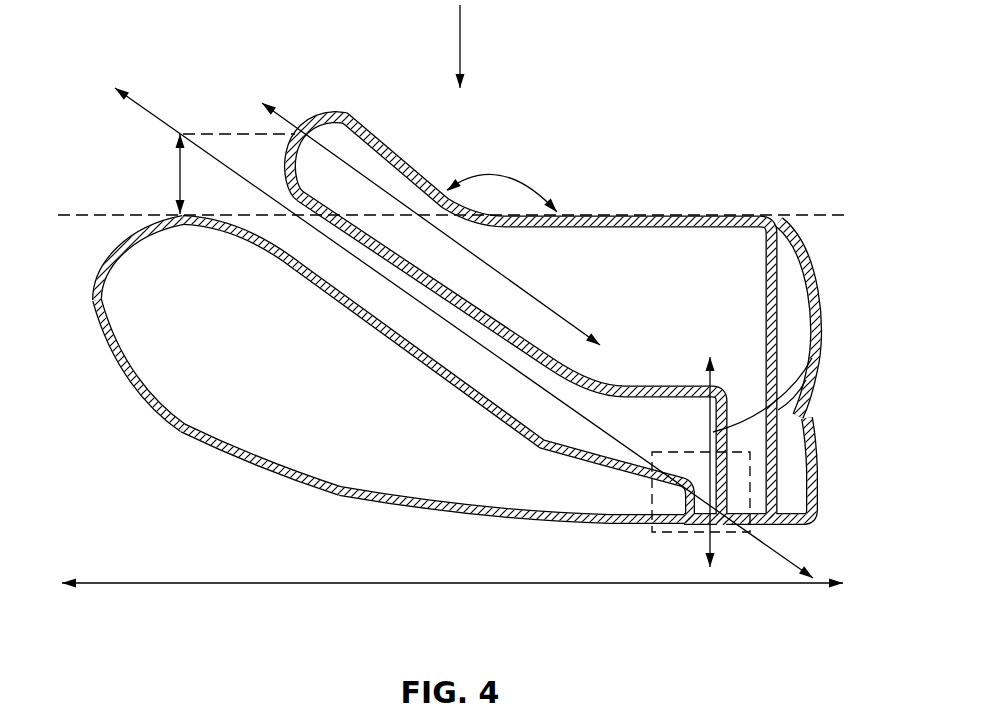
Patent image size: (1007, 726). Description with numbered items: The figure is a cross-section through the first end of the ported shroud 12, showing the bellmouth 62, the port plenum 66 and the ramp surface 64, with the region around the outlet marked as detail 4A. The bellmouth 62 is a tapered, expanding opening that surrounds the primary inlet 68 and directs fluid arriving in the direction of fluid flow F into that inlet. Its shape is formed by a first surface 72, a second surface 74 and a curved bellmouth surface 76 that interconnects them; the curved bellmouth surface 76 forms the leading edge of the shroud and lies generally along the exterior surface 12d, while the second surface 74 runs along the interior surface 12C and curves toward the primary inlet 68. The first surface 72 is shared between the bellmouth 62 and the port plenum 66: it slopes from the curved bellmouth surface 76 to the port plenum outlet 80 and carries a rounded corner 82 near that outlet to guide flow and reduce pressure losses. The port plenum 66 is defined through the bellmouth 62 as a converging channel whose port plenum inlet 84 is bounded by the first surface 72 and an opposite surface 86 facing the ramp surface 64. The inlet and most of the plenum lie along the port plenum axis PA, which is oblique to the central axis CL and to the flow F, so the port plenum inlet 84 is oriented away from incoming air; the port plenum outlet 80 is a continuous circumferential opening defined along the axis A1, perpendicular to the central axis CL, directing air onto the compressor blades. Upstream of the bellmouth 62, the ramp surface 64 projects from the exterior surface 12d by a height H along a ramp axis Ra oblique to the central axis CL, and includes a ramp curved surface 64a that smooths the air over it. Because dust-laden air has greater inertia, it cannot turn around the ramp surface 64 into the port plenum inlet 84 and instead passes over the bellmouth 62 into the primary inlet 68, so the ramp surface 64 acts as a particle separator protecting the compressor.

The ported shroud 12 is at (620, 132).
The exterior surface 12d is at (703, 214).
The interior surface 12C is at (548, 528).
The bellmouth 62 is at (150, 139).
The ramp surface 64 is at (352, 93).
The ramp curved surface 64a is at (507, 210).
The port plenum 66 is at (378, 266).
The primary inlet 68 is at (334, 498).
The first surface 72 is at (197, 212).
The second surface 74 is at (178, 434).
The curved bellmouth surface 76 is at (95, 277).
The port plenum outlet 80 is at (704, 518).
The rounded corner 82 is at (672, 500).
The port plenum inlet 84 is at (237, 215).
The surface 86 is at (300, 214).
The fluid flow F is at (462, 43).
The height H is at (177, 178).
The ramp axis Ra is at (561, 313).
The axis A1 is at (810, 363).
The port plenum axis PA is at (770, 558).
The central axis CL is at (768, 585).
The detail of port plenum outlet 4A is at (655, 535).